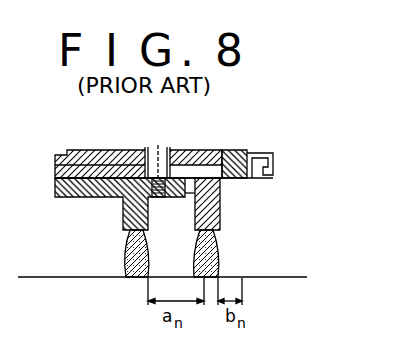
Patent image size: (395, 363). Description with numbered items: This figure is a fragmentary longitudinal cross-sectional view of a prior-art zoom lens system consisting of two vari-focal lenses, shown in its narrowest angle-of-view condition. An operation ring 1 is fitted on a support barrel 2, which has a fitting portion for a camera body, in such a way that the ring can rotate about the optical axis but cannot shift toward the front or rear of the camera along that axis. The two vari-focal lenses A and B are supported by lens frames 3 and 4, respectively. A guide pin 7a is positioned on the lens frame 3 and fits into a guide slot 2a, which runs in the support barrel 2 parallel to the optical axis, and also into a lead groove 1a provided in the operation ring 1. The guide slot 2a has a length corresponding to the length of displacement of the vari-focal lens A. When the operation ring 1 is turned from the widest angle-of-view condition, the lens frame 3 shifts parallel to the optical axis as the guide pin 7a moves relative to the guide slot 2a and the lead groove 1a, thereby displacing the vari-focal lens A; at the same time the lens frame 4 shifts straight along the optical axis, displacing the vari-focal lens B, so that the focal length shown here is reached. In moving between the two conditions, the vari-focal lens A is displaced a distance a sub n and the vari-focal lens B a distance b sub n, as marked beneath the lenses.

The operation ring 1 is at (110, 148).
The lead groove 1a is at (152, 147).
The guide pin 7a is at (168, 152).
The guide slot 2a is at (222, 170).
The support barrel 2 is at (250, 155).
The lens frame 3 is at (83, 197).
The lens frame 4 is at (218, 215).
The vari-focal lens A is at (126, 253).
The vari-focal lens B is at (217, 254).